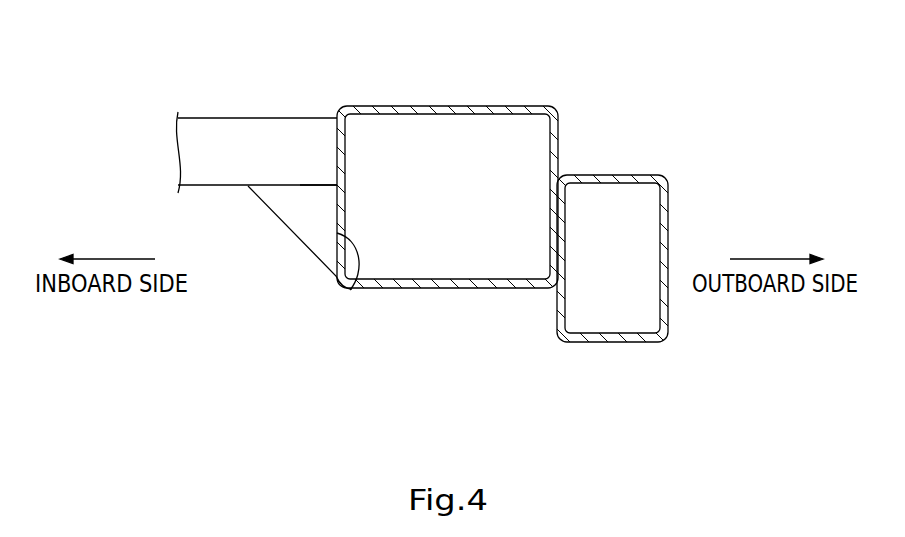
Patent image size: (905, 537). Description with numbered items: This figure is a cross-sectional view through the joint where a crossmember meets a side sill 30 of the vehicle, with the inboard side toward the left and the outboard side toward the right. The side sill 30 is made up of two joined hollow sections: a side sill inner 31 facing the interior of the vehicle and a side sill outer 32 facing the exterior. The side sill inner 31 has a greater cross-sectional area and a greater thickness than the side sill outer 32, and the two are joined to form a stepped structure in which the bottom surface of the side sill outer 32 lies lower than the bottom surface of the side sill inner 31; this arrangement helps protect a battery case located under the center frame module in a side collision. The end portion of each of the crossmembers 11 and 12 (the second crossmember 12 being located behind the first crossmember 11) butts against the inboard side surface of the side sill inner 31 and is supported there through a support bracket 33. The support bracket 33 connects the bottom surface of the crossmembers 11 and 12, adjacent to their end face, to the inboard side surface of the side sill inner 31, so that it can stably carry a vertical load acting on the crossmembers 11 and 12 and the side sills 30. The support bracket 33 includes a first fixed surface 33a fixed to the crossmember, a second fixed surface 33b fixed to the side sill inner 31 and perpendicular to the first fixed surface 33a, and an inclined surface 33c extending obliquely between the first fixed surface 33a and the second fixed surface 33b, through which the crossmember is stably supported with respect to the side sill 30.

The first crossmember 11 is at (255, 118).
The second crossmember 12 is at (256, 122).
The side sill 30 is at (502, 193).
The side sill inner 31 is at (445, 106).
The side sill outer 32 is at (608, 175).
The support bracket 33 is at (275, 226).
The first fixed surface 33a is at (300, 184).
The second fixed surface 33b is at (350, 290).
The inclined surface 33c is at (300, 240).